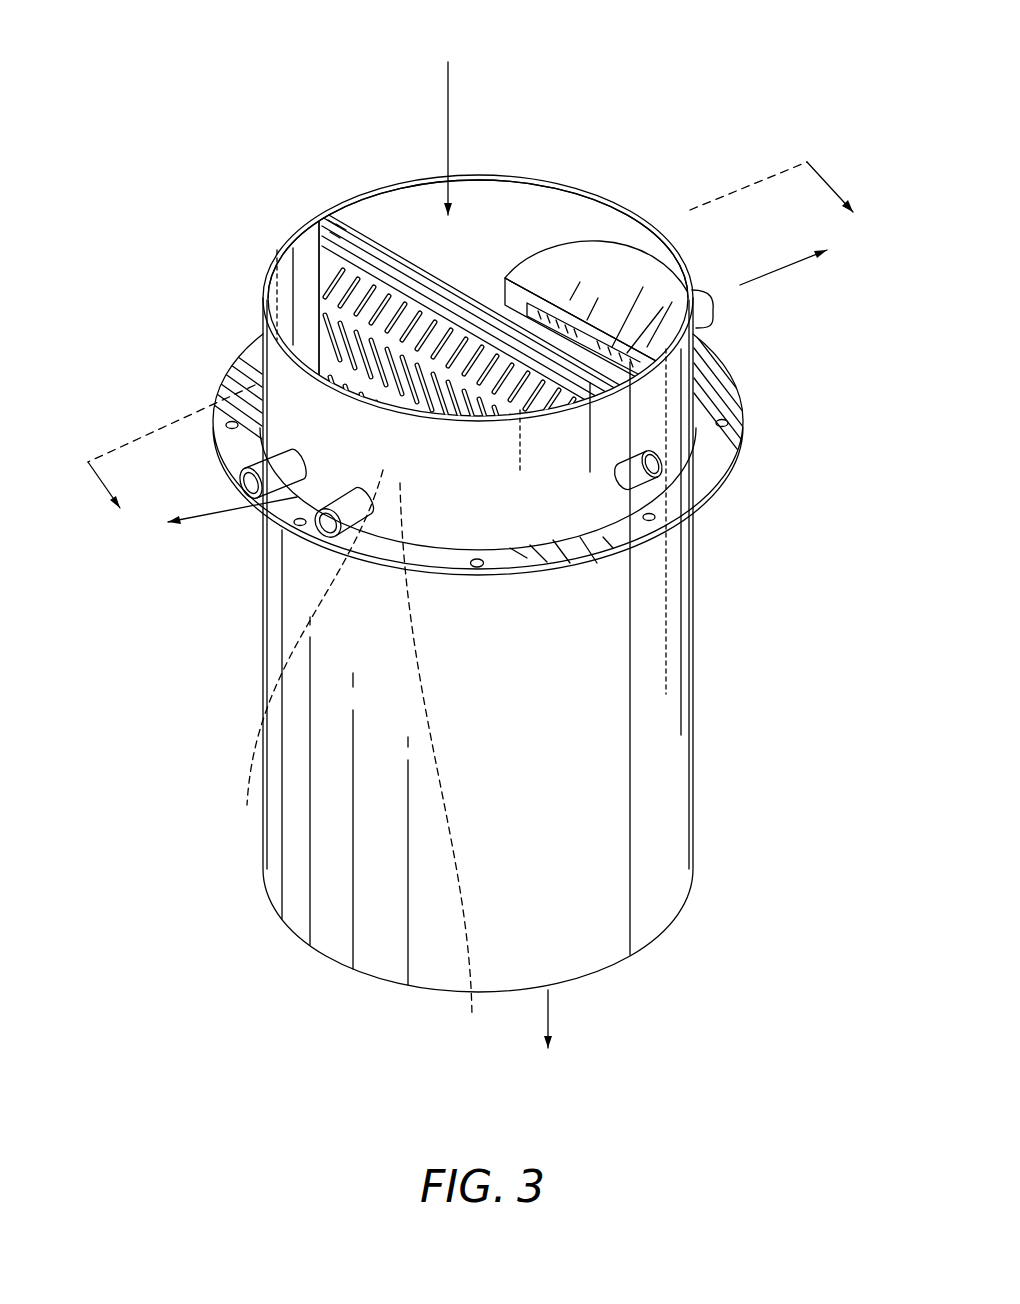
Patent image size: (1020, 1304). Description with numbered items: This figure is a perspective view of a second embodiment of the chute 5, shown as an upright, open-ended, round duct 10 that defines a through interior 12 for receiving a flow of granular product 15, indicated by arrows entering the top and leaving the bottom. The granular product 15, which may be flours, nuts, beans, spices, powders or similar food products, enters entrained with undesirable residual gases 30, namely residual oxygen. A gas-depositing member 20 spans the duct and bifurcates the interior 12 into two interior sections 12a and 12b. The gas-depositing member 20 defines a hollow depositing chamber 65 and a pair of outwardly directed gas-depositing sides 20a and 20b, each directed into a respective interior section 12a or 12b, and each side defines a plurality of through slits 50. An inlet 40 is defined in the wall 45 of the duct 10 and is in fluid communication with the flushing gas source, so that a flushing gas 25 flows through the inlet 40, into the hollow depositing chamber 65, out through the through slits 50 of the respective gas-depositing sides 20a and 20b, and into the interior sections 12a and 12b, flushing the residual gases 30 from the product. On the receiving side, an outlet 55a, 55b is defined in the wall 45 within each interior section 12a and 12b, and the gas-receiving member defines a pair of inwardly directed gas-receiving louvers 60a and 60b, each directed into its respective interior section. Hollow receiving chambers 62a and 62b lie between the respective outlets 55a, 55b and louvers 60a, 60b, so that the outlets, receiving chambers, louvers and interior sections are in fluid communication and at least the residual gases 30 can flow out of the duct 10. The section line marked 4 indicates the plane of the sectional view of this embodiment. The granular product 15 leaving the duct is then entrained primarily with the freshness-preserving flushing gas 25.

The section line 4- 4 is at (476, 353).
The chute 5 is at (790, 66).
The duct 10 is at (300, 627).
The interior 12 is at (526, 197).
The interior section 12a is at (628, 238).
The interior section 12b is at (286, 268).
The granular product 15 is at (447, 94).
The gas-depositing member 20 is at (380, 250).
The gas-depositing side 20a is at (492, 300).
The gas-depositing side 20b is at (316, 290).
The flushing gas 25 is at (584, 345).
The residual gases 30 is at (203, 511).
The inlet 40 is at (680, 460).
The wall 45 is at (678, 412).
The through slits 50 is at (318, 335).
The outlet 55a is at (712, 306).
The outlet 55b is at (238, 462).
The gas-receiving louver 60a is at (650, 258).
The gas-receiving louver 60b is at (294, 655).
The receiving chamber 62a is at (697, 328).
The receiving chamber 62b is at (449, 769).
The hollow depositing chamber 65 is at (320, 210).